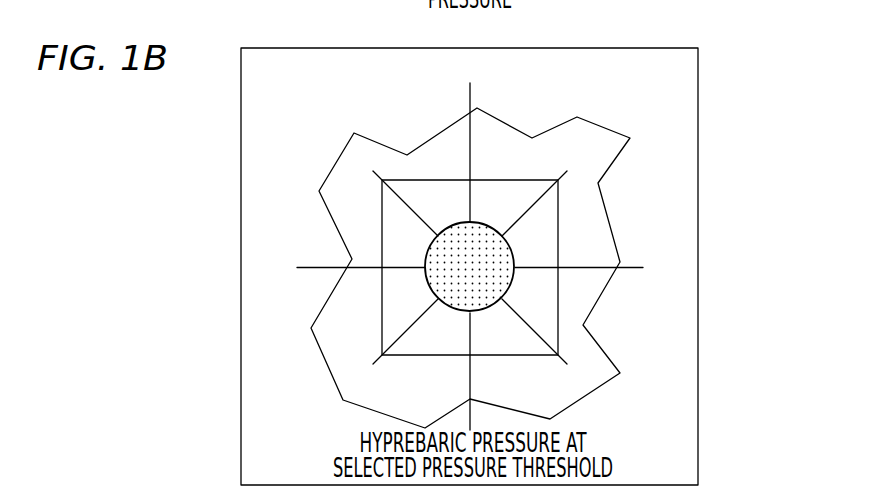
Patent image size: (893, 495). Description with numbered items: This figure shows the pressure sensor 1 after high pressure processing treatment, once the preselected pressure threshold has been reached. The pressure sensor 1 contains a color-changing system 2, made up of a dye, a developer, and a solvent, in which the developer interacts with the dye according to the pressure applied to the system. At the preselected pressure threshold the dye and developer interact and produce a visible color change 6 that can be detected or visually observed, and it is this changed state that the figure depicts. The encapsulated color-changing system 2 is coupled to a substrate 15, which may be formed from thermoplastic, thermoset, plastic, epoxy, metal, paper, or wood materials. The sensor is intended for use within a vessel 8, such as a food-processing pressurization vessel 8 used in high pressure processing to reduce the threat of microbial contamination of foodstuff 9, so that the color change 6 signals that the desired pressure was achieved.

The pressure sensor 1 is at (515, 230).
The color-changing system 2 is at (499, 276).
The visible color change 6 is at (528, 217).
The vessel 8 is at (698, 416).
The foodstuff 9 is at (340, 175).
The substrate 15 is at (428, 192).